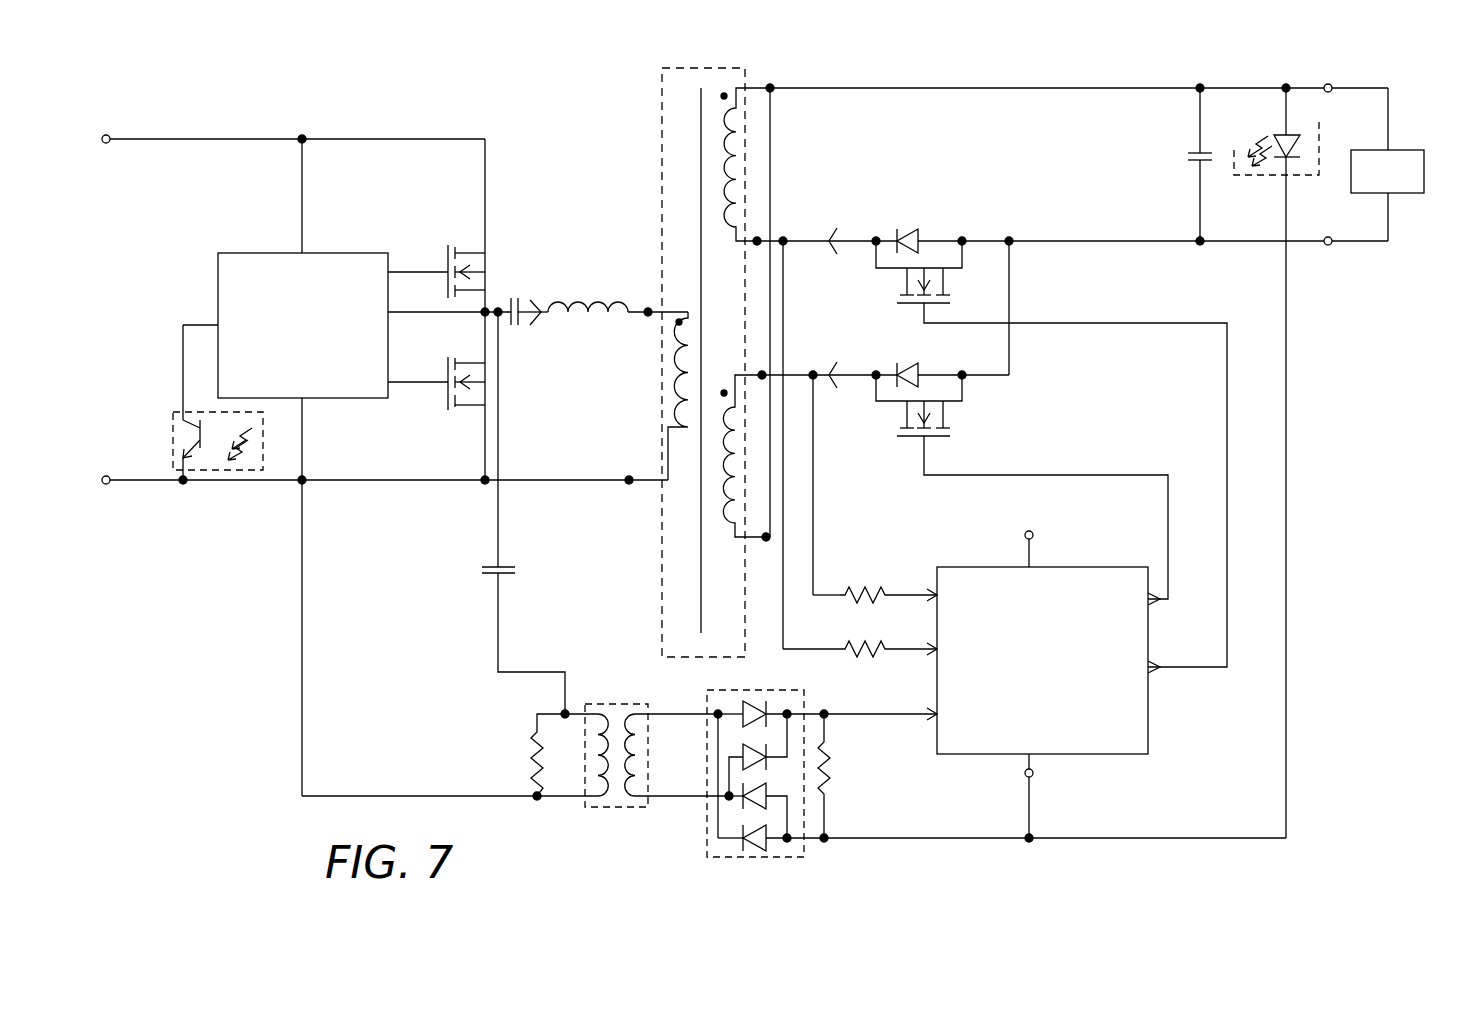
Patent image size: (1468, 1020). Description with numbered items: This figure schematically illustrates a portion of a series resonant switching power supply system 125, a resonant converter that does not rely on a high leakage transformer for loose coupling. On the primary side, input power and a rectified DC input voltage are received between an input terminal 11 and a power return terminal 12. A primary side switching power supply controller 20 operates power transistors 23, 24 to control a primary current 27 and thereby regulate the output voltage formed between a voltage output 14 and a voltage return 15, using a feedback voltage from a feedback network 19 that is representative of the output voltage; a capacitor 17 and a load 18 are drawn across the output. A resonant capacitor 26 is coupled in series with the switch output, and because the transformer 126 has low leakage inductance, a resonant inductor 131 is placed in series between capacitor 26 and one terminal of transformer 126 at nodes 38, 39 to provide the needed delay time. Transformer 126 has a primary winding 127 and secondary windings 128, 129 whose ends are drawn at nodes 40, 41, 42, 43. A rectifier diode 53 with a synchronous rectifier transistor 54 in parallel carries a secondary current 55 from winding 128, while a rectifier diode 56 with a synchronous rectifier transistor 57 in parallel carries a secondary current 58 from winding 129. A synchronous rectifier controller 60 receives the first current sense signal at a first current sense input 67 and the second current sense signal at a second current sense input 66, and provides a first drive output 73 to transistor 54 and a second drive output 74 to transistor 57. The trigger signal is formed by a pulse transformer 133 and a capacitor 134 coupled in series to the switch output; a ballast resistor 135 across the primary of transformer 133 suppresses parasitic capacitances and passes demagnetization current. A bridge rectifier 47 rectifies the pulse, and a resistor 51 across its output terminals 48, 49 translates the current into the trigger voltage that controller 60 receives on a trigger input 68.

The input terminal 11 is at (108, 134).
The power return terminal 12 is at (108, 475).
The voltage output 14 is at (1332, 84).
The voltage return 15 is at (1331, 246).
The output capacitor 17 is at (1186, 158).
The load 18 is at (1404, 150).
The feedback network 19 is at (172, 432).
The primary side switching power supply controller 20 is at (236, 252).
The power transistor 23 is at (446, 253).
The power transistor 24 is at (446, 363).
The resonant capacitor 26 is at (513, 296).
The primary current 27 is at (540, 323).
The primary winding node 38 is at (647, 307).
The primary winding node 39 is at (630, 475).
The secondary winding node 40 is at (774, 86).
The secondary winding node 41 is at (760, 237).
The secondary winding node 42 is at (765, 370).
The secondary winding node 43 is at (768, 542).
The bridge rectifier 47 is at (706, 856).
The output terminal 48 is at (826, 708).
The output terminal 49 is at (828, 842).
The resistor 51 is at (830, 758).
The rectifier diode 53 is at (908, 230).
The synchronous rectifier transistor 54 is at (892, 290).
The secondary current 55 is at (831, 230).
The rectifier diode 56 is at (908, 364).
The synchronous rectifier transistor 57 is at (896, 426).
The secondary current 58 is at (831, 364).
The synchronous rectifier controller 60 is at (1088, 756).
The second current sense input 66 is at (924, 590).
The first current sense input 67 is at (924, 645).
The TG input 68 is at (924, 710).
The first drive output 73 is at (1158, 672).
The second drive output 74 is at (1158, 604).
The series resonant switching power supply system 125 is at (238, 686).
The transformer 126 is at (694, 362).
The primary winding 127 is at (680, 306).
The secondary winding 128 is at (730, 235).
The secondary winding 129 is at (733, 530).
The resonant inductor 131 is at (600, 300).
The pulse transformer 133 is at (626, 702).
The capacitor 134 is at (490, 577).
The ballast resistor 135 is at (530, 760).